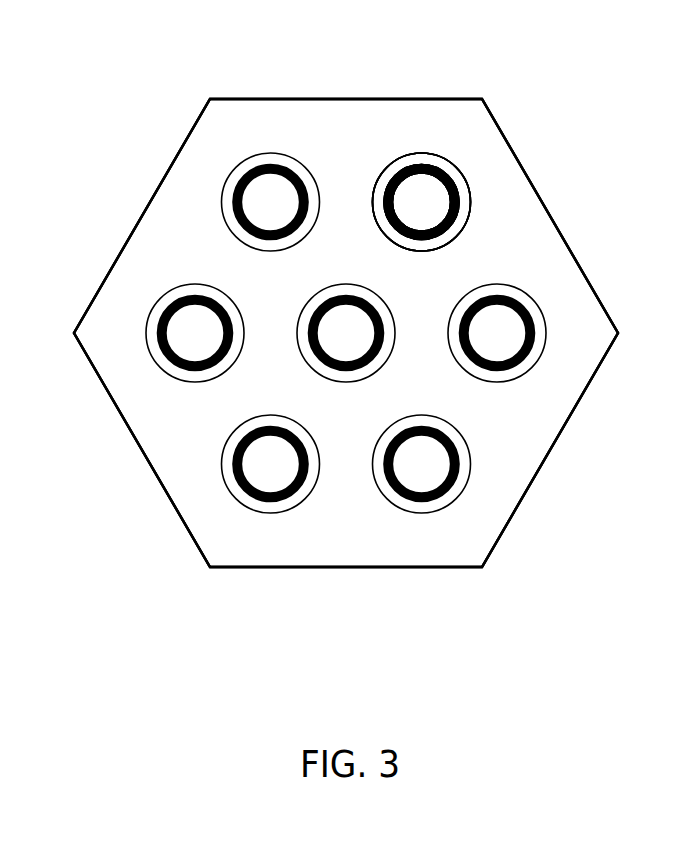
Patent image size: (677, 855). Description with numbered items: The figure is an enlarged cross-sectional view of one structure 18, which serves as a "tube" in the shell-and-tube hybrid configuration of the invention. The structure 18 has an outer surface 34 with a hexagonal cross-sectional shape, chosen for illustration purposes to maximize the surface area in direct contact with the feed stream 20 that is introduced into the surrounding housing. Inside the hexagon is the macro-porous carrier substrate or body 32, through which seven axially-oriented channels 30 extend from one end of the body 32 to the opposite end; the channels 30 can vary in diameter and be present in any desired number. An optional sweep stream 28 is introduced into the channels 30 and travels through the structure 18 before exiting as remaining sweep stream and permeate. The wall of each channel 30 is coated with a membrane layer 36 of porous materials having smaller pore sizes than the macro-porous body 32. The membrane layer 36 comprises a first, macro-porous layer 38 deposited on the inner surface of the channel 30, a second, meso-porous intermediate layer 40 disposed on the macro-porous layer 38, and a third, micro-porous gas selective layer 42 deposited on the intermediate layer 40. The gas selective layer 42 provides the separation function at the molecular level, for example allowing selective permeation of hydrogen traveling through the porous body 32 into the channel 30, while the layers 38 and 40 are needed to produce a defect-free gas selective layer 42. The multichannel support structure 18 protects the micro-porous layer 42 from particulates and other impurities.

The structure 18 is at (510, 146).
The feed stream 20 is at (298, 358).
The sweep stream 28 is at (256, 211).
The channel 30 is at (443, 163).
The macro-porous carrier substrate or body 32 is at (545, 257).
The outer surface 34 is at (537, 192).
The membrane layer 36 is at (415, 160).
The first macro-porous layer 38 is at (400, 163).
The meso-porous intermediate layer 40 is at (395, 228).
The gas selective layer 42 is at (413, 222).